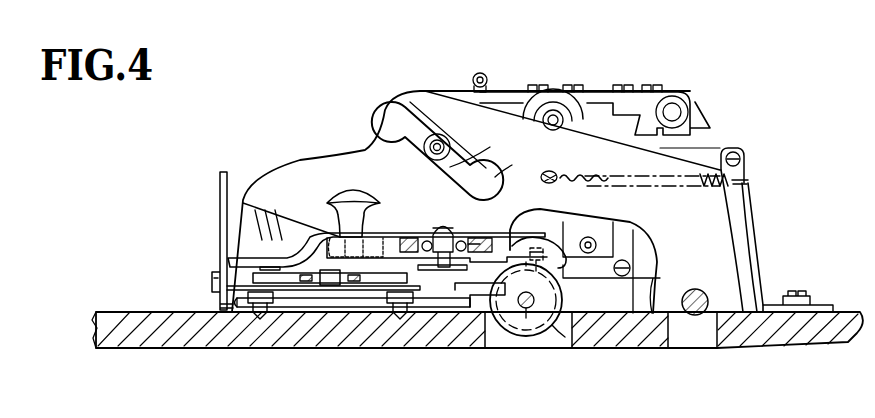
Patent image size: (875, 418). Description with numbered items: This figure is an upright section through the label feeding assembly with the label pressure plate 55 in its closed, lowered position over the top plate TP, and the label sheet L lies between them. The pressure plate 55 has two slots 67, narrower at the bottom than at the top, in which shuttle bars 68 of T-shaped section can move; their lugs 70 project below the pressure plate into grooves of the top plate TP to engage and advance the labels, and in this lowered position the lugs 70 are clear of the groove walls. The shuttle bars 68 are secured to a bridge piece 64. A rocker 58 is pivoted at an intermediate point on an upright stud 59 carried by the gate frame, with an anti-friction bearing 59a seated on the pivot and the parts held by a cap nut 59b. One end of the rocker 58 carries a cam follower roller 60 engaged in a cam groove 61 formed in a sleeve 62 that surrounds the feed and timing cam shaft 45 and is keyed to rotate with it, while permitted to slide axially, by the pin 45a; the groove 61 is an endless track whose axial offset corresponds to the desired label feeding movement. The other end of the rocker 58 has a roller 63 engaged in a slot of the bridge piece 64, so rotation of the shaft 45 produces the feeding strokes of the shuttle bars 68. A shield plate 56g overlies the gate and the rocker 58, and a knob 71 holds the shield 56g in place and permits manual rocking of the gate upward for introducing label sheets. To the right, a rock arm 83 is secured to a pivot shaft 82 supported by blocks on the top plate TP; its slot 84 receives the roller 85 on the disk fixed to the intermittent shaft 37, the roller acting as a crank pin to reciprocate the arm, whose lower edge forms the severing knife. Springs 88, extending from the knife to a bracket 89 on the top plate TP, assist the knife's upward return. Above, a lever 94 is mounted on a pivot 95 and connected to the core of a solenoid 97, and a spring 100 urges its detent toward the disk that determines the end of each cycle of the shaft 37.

The top plate TP is at (108, 343).
The label L is at (157, 312).
The shield plate 56g is at (240, 255).
The knob 71 is at (350, 190).
The roller 85 is at (447, 137).
The shaft 37 is at (489, 150).
The slot 84 is at (519, 166).
The pivot 95 is at (553, 117).
The lever 94 is at (602, 93).
The solenoid 97 is at (727, 147).
The springs 88 is at (578, 173).
The rock arm 83 is at (720, 216).
The bracket 89 is at (765, 266).
The cam follower roller 60 is at (567, 252).
The feed and timing cam shaft 45 is at (537, 295).
The pin 45a is at (522, 317).
The cam groove 61 is at (527, 333).
The sleeve 62 is at (550, 338).
The rocker 58 is at (408, 267).
The roller 63 is at (320, 282).
The label pressure plate 55 is at (325, 310).
The bridge piece 64 is at (370, 290).
The stud 59 is at (432, 240).
The anti-friction bearing 59a is at (458, 240).
The cap nut 59b is at (440, 222).
The shuttle bars 68 is at (258, 313).
The lugs 70 is at (270, 323).
The slots 67 is at (247, 298).
The pivot shaft 82 is at (696, 316).
The spring 100 is at (392, 414).